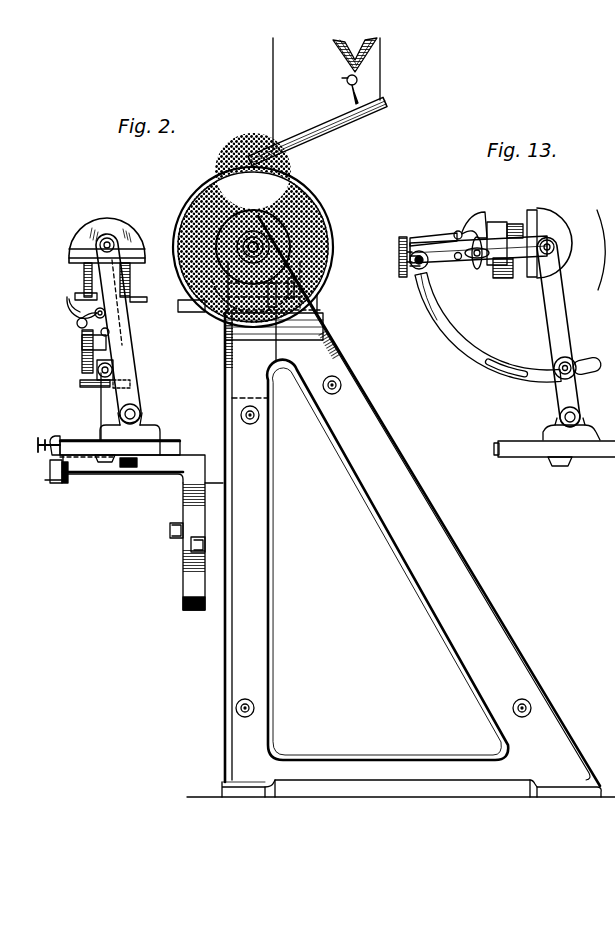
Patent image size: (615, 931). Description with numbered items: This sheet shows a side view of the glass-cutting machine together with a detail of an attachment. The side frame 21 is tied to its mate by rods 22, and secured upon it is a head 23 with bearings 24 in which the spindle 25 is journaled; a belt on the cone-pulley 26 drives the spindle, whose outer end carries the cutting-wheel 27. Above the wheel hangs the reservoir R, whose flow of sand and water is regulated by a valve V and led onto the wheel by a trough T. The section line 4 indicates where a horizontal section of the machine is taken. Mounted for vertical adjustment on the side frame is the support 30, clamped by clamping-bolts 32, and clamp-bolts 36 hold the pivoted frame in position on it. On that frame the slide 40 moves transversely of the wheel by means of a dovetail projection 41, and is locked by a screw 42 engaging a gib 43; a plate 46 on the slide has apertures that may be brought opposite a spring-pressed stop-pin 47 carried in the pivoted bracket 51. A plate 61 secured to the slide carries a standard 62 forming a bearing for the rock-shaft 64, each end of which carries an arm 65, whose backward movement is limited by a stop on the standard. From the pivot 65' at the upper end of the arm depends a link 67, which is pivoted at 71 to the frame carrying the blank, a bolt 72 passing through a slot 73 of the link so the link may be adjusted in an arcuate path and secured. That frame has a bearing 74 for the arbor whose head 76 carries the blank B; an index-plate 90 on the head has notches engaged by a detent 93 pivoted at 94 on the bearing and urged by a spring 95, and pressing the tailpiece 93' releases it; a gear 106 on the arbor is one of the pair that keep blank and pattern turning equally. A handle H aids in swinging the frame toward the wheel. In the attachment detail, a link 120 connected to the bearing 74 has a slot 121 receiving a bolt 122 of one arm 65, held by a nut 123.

In FIG. 2, the side frame 21 is at (423, 533).
In FIG. 2, the rods 22 is at (327, 388).
In FIG. 2, the bearings 24 is at (257, 232).
In FIG. 2, the spindle 25 is at (268, 247).
In FIG. 2, the cone-pulley 26 is at (290, 233).
In FIG. 2, the cutting-wheel 27 is at (291, 187).
In FIG. 13, the cutting-wheel 27 is at (603, 225).
In FIG. 2, the support 30 is at (215, 597).
In FIG. 2, the clamping-bolts 32 is at (195, 552).
In FIG. 2, the clamp-bolts 36 is at (172, 530).
In FIG. 2, the slide 40 is at (172, 448).
In FIG. 13, the slide 40 is at (522, 457).
In FIG. 2, the dovetail projection 41 is at (108, 463).
In FIG. 13, the dovetail projection 41 is at (562, 462).
In FIG. 2, the screw 42 is at (52, 465).
In FIG. 2, the gib 43 is at (183, 600).
In FIG. 13, the plate 46 is at (495, 448).
In FIG. 2, the stop-pin 47 is at (52, 440).
In FIG. 2, the bracket 51 is at (45, 440).
In FIG. 2, the plate 61 is at (147, 437).
In FIG. 13, the standard 62 is at (585, 437).
In FIG. 2, the rock-shaft 64 is at (141, 415).
In FIG. 13, the rock-shaft 64 is at (560, 417).
In FIG. 2, the arm 65 is at (135, 328).
In FIG. 13, the arm 65 is at (550, 332).
In FIG. 2, the pivot 65' is at (127, 221).
In FIG. 13, the pivot 65' is at (573, 271).
In FIG. 2, the link 67 is at (98, 290).
In FIG. 13, the link 67 is at (520, 255).
In FIG. 2, the pivot 71 is at (101, 333).
In FIG. 13, the pivot 71 is at (458, 260).
In FIG. 13, the bolt 72 is at (483, 248).
In FIG. 2, the slot 73 is at (93, 312).
In FIG. 13, the slot 73 is at (475, 270).
In FIG. 13, the bearing 74 is at (427, 295).
In FIG. 13, the head 76 is at (512, 226).
In FIG. 13, the index-plate 90 is at (493, 280).
In FIG. 2, the detent 93 is at (65, 301).
In FIG. 13, the detent 93 is at (489, 207).
In FIG. 2, the tailpiece 93' is at (82, 400).
In FIG. 13, the tailpiece 93' is at (433, 224).
In FIG. 2, the pivot 94 is at (77, 323).
In FIG. 13, the pivot 94 is at (458, 230).
In FIG. 2, the spring 95 is at (82, 348).
In FIG. 13, the gear 106 is at (410, 278).
In FIG. 13, the link 120 is at (465, 347).
In FIG. 13, the slot 121 is at (512, 370).
In FIG. 13, the bolt 122 is at (577, 357).
In FIG. 13, the nut 123 is at (563, 377).
In FIG. 2, the blank B is at (88, 220).
In FIG. 13, the blank B is at (545, 211).
In FIG. 13, the handle H is at (400, 270).
In FIG. 2, the reservoir R is at (335, 50).
In FIG. 2, the trough T is at (323, 130).
In FIG. 2, the valve V is at (343, 79).
In FIG. 2, the section line 4 is at (6, 280).
In FIG. 2, the head 23 is at (10, 297).